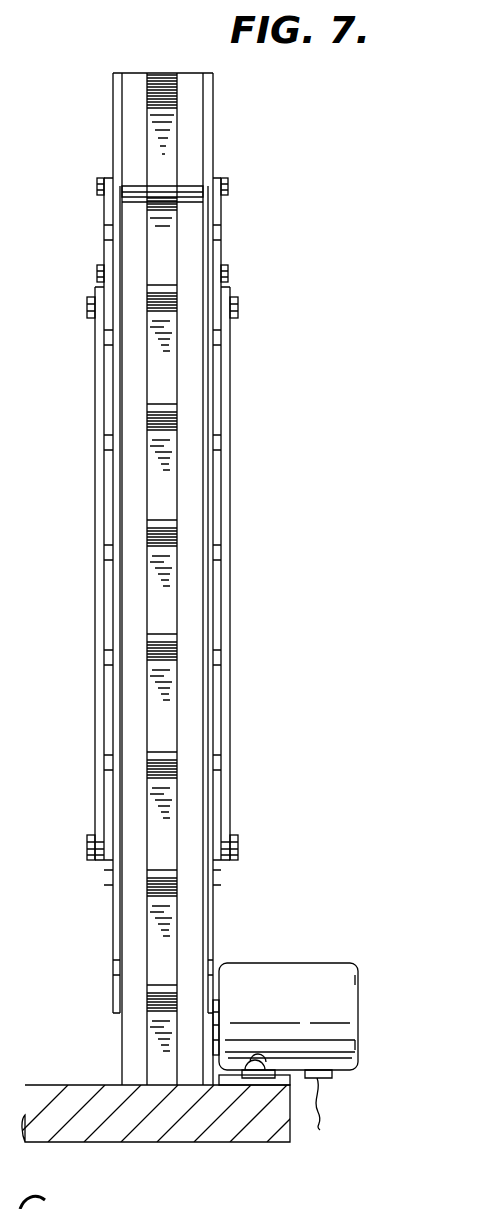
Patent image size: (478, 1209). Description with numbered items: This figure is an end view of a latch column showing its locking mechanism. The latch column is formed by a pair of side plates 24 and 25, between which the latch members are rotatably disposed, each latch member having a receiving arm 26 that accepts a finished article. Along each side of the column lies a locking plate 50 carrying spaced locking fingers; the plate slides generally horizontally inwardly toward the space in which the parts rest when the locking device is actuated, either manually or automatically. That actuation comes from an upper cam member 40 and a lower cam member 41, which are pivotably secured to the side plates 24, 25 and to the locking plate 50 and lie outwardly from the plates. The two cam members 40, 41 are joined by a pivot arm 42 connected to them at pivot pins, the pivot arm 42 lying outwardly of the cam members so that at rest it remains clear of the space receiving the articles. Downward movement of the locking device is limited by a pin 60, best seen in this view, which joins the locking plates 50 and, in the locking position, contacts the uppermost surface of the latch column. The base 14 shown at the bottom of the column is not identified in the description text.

The base 14 is at (242, 1128).
The side plate 24 is at (188, 127).
The side plate 25 is at (133, 102).
The receiving arm 26 is at (163, 410).
The upper cam member 40 is at (103, 241).
The lower cam member 41 is at (115, 777).
The pivot arm 42 is at (226, 530).
The locking plate 50 is at (115, 138).
The pin 60 is at (186, 193).